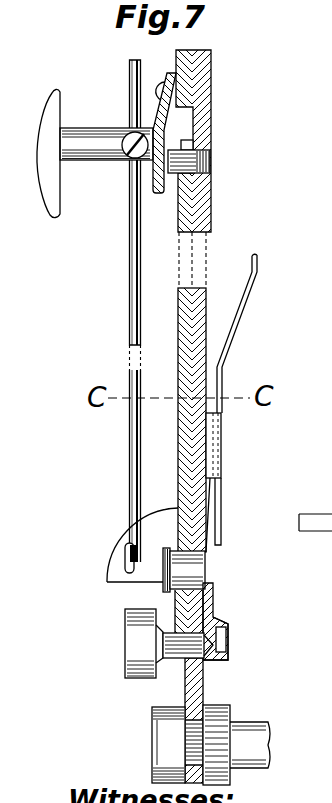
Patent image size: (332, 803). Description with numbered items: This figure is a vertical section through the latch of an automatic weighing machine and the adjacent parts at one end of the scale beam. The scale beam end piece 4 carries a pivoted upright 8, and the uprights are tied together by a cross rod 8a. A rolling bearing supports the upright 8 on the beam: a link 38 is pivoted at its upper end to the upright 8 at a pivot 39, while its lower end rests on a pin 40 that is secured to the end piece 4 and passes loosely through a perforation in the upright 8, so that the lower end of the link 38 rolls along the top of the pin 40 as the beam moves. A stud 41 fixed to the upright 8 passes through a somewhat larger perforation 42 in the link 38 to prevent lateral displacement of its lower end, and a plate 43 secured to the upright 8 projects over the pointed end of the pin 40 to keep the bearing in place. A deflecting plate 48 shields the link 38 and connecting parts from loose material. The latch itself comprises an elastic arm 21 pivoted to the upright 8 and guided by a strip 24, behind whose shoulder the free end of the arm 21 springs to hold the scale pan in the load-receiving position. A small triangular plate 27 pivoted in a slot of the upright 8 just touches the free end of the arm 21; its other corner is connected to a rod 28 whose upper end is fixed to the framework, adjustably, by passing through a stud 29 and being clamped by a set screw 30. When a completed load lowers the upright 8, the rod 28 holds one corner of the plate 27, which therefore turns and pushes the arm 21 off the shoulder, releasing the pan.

The end piece 4 is at (125, 640).
The upright 8 is at (203, 197).
The cross rod 8a is at (235, 735).
The arm 21 is at (249, 300).
The strip 24 is at (221, 450).
The triangular plate 27 is at (153, 522).
The rod 28 is at (129, 273).
The stud 29 is at (100, 154).
The set screw 30 is at (127, 133).
The link 38 is at (178, 327).
The pivot 39 is at (210, 163).
The pin 40 is at (170, 660).
The stud 41 is at (206, 560).
The perforation 42 is at (211, 598).
The plate 43 is at (243, 637).
The deflecting plate 48 is at (159, 194).